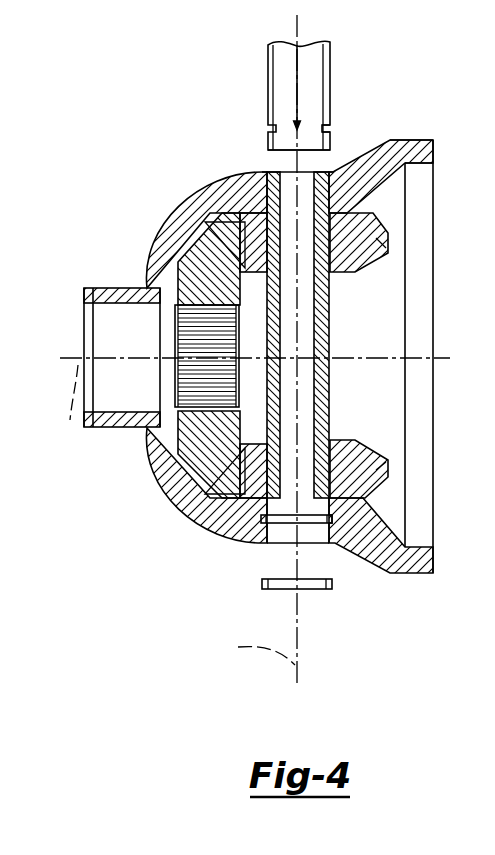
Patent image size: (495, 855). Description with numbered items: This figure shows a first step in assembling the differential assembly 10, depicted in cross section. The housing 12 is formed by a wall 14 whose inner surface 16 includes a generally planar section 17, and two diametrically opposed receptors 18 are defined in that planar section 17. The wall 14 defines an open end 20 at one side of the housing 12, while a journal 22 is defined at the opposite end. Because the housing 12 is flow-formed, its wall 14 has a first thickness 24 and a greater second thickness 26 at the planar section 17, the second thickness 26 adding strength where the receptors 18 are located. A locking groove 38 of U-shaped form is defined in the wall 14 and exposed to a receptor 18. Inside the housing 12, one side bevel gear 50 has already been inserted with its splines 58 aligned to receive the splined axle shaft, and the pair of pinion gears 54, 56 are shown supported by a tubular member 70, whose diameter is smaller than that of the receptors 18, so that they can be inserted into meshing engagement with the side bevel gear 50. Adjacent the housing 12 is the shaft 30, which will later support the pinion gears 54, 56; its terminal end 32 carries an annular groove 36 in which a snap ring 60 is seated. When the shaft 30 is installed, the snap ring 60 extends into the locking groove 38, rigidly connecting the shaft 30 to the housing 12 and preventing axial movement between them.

The differential assembly 10 is at (140, 110).
The housing 12 is at (162, 184).
The wall 14 is at (201, 509).
The inner surface 16 is at (383, 527).
The generally planar section 17 is at (346, 207).
The receptors 18 is at (326, 528).
The open end 20 is at (418, 166).
The journal 22 is at (96, 288).
The first thickness 24 is at (160, 239).
The second thickness 26 is at (260, 184).
The shaft 30 is at (268, 82).
The terminal end 32 is at (268, 150).
The annular groove 36 is at (331, 127).
The locking groove 38 is at (270, 527).
The side bevel gear 50 is at (198, 452).
The pinion gear 54 is at (345, 262).
The pinion gear 56 is at (343, 452).
The splines 58 is at (180, 398).
The snap ring 60 is at (317, 590).
The tubular member 70 is at (322, 338).